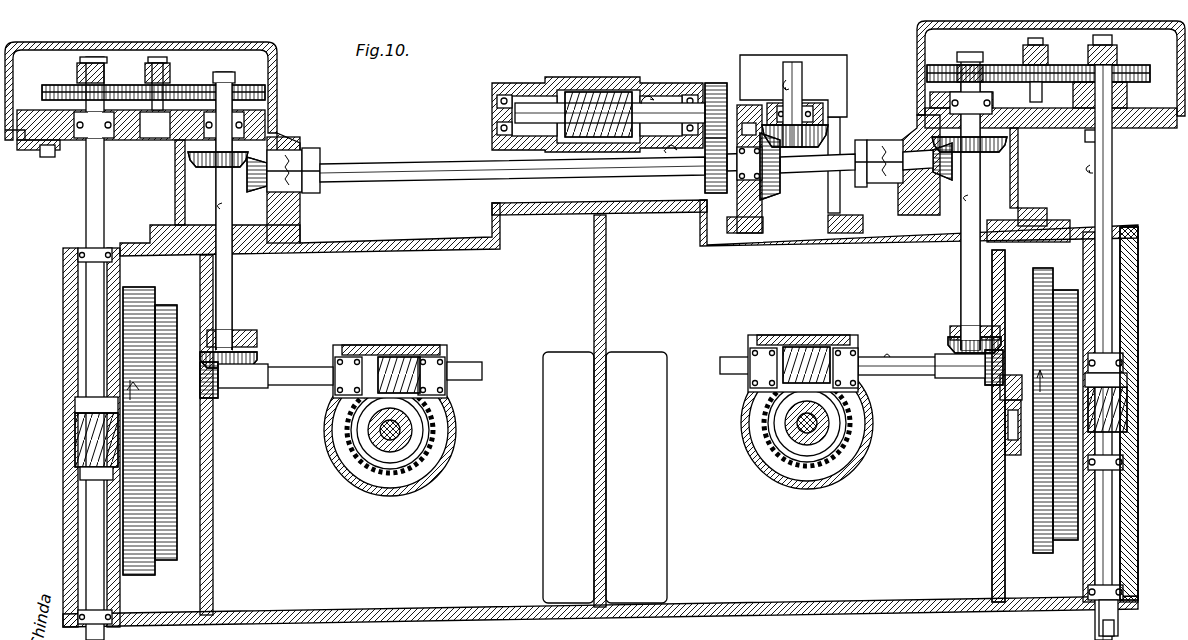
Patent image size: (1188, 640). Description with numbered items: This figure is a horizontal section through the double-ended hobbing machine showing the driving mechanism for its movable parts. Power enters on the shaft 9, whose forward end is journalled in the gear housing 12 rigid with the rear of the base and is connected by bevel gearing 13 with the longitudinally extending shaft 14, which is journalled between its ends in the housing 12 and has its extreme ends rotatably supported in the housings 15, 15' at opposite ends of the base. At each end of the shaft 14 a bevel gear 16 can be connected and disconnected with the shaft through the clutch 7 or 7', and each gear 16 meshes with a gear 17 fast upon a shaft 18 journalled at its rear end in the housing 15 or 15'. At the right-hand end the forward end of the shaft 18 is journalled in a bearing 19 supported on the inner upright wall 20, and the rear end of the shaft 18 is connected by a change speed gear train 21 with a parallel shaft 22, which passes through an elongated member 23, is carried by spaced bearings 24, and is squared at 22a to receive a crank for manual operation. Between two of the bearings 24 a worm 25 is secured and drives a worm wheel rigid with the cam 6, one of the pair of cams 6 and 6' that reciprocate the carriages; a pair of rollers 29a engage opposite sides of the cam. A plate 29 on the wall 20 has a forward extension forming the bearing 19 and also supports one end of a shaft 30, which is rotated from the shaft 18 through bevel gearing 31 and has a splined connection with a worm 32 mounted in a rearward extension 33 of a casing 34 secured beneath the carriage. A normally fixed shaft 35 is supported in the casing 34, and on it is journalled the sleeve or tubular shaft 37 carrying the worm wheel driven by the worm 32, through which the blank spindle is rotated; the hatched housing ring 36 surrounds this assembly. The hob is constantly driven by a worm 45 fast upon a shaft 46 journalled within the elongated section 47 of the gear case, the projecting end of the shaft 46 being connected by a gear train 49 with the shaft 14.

The cam 6 is at (1100, 410).
The cam 6' is at (107, 431).
The clutch 7 is at (879, 149).
The clutch 7' is at (303, 156).
The shaft 9 is at (797, 70).
The gear housing 12 is at (742, 107).
The bevel gearing 13 is at (762, 100).
The longitudinally extending shaft 14 is at (634, 168).
The housing 15 is at (1036, 118).
The housing 15' is at (167, 101).
The bevel gear 16 is at (260, 190).
The gear 17 is at (205, 168).
The shaft 18 is at (233, 290).
The bearing 19 is at (950, 332).
The inner upright wall 20 is at (1002, 416).
The change speed gear train 21 is at (1000, 78).
The shaft 22 is at (1105, 153).
The squared end 22a is at (1118, 632).
The elongated member 23 is at (1130, 305).
The bearings 24 is at (1125, 358).
The worm 25 is at (1125, 400).
The plate 29 is at (1011, 430).
The rollers 29a is at (1007, 378).
The shaft 30 is at (885, 360).
The bevel gearing 31 is at (981, 371).
The worm 32 is at (812, 350).
The rearward extension 33 is at (783, 345).
The casing 34 is at (749, 423).
The shaft 35 is at (792, 435).
The worm gear 36 is at (837, 462).
The sleeve or tubular shaft 37 is at (812, 440).
The worm 45 is at (608, 95).
The shaft 46 is at (548, 103).
The elongated section of gear case 47 is at (583, 78).
The gear train 49 is at (714, 85).